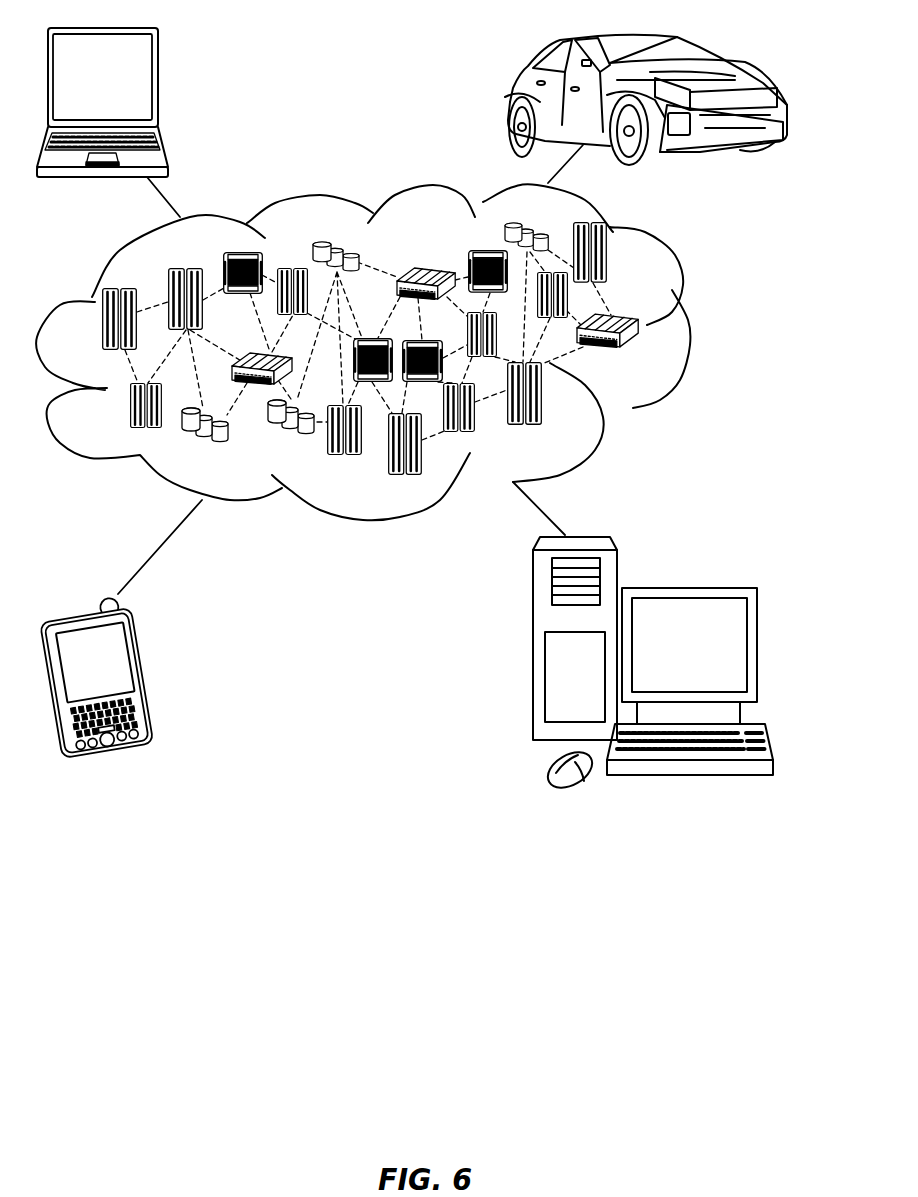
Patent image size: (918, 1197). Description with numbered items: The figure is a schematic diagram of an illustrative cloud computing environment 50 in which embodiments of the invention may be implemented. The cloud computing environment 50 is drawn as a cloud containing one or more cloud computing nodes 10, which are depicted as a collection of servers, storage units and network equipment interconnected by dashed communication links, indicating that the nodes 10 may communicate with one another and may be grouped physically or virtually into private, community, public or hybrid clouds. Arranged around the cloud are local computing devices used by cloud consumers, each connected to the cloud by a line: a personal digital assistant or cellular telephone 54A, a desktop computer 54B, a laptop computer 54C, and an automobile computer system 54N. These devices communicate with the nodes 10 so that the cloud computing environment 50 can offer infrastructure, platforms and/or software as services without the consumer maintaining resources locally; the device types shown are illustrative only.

The cloud computing node 10 is at (646, 361).
The cloud computing environment 50 is at (688, 329).
The personal digital assistant or cellular telephone 54A is at (149, 673).
The desktop computer 54B is at (686, 588).
The laptop computer 54C is at (158, 84).
The automobile computer system 54N is at (509, 97).